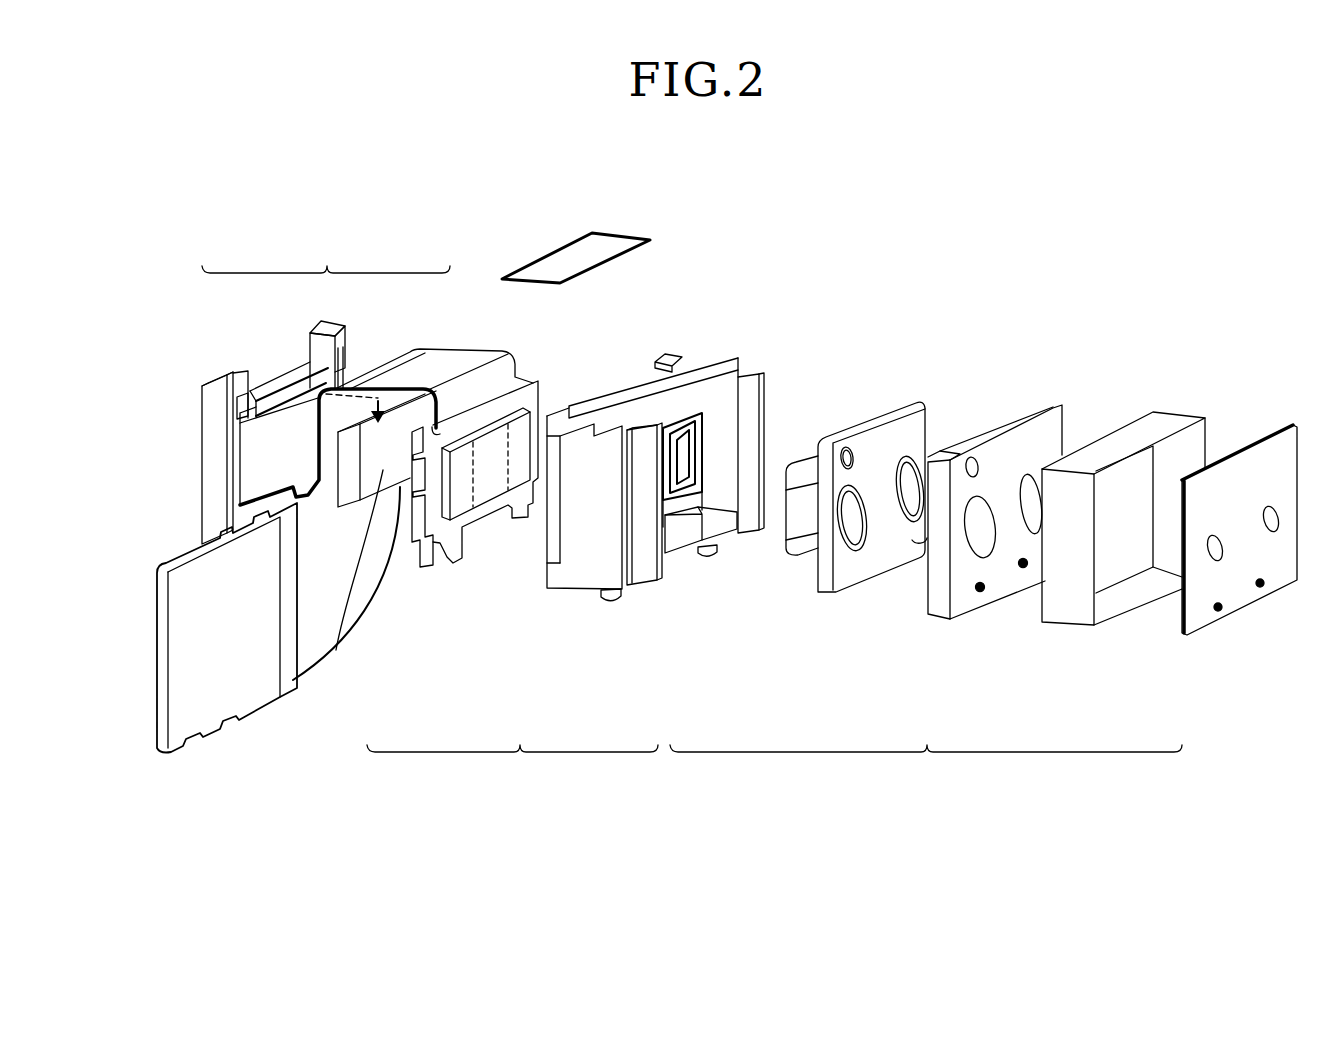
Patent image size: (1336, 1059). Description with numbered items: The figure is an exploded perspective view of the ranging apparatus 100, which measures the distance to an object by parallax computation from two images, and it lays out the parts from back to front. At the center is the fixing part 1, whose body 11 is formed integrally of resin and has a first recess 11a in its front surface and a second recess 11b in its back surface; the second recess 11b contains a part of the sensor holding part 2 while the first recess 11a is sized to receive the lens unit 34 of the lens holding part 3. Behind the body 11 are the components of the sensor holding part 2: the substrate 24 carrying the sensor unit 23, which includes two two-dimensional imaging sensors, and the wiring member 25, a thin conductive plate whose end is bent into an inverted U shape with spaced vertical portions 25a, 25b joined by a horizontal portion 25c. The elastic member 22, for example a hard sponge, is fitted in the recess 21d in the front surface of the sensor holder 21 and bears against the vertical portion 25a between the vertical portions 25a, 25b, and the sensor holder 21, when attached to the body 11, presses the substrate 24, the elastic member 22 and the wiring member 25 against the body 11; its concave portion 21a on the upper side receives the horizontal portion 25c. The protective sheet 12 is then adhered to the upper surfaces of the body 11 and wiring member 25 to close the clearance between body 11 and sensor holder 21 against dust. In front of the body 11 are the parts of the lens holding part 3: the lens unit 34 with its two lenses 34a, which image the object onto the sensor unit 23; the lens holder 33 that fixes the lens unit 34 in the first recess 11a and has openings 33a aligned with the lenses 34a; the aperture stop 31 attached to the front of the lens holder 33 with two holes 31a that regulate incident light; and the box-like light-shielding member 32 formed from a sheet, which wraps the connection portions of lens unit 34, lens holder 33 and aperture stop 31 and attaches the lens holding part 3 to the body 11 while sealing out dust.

The ranging apparatus 100 is at (1088, 283).
The fixing part 1 is at (512, 767).
The sensor holding part 2 is at (326, 250).
The lens holding part 3 is at (926, 767).
The body 11 is at (705, 378).
The first recess 11a is at (688, 524).
The second recess 11b is at (624, 380).
The protective sheet 12 is at (575, 258).
The sensor holder 21 is at (212, 410).
The concave portion 21a is at (286, 386).
The recess 21d is at (253, 477).
The elastic member 22 is at (336, 650).
The sensor unit 23 is at (478, 480).
The substrate 24 is at (436, 575).
The wiring member 25 is at (472, 348).
The vertical portion 25a is at (526, 380).
The vertical portion 25b is at (335, 423).
The horizontal portion 25c is at (436, 368).
The aperture stop 31 is at (1265, 462).
The holes 31a is at (1278, 527).
The light-shielding member 32 is at (1070, 606).
The lens holder 33 is at (1045, 425).
The openings 33a is at (1038, 470).
The lens unit 34 is at (826, 575).
The lenses 34a is at (908, 477).